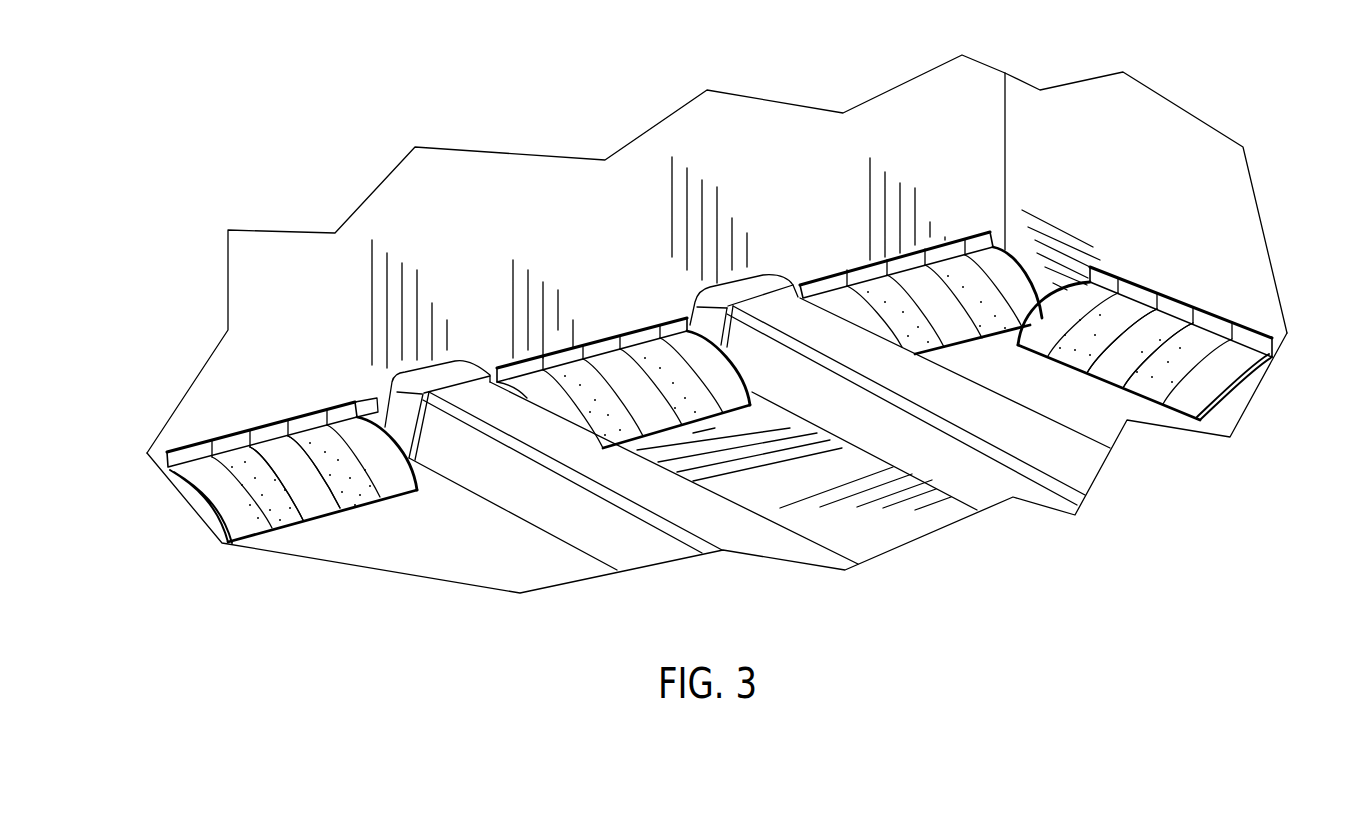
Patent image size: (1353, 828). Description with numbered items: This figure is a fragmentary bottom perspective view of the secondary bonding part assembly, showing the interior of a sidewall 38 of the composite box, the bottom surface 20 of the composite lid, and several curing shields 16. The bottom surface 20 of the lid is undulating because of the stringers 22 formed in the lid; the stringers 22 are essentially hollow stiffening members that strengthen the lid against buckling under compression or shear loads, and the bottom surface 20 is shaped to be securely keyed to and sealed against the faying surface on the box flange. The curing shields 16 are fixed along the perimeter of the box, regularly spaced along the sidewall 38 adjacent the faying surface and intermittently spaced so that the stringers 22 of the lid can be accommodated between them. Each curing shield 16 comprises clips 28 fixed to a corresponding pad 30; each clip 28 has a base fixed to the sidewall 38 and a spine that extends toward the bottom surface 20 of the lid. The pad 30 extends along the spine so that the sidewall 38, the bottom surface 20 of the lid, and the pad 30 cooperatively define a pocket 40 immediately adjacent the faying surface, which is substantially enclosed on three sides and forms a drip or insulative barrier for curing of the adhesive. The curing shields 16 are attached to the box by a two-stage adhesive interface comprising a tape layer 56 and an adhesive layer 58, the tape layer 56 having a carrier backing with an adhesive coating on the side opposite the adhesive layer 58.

The curing shield 16 is at (178, 447).
The bottom surface 20 is at (393, 553).
The stringer 22 is at (757, 542).
The clip 28 is at (228, 440).
The pad 30 is at (266, 428).
The sidewall 38 is at (740, 138).
The pocket 40 is at (196, 504).
The tape layer 56 is at (380, 396).
The adhesive layer 58 is at (372, 400).